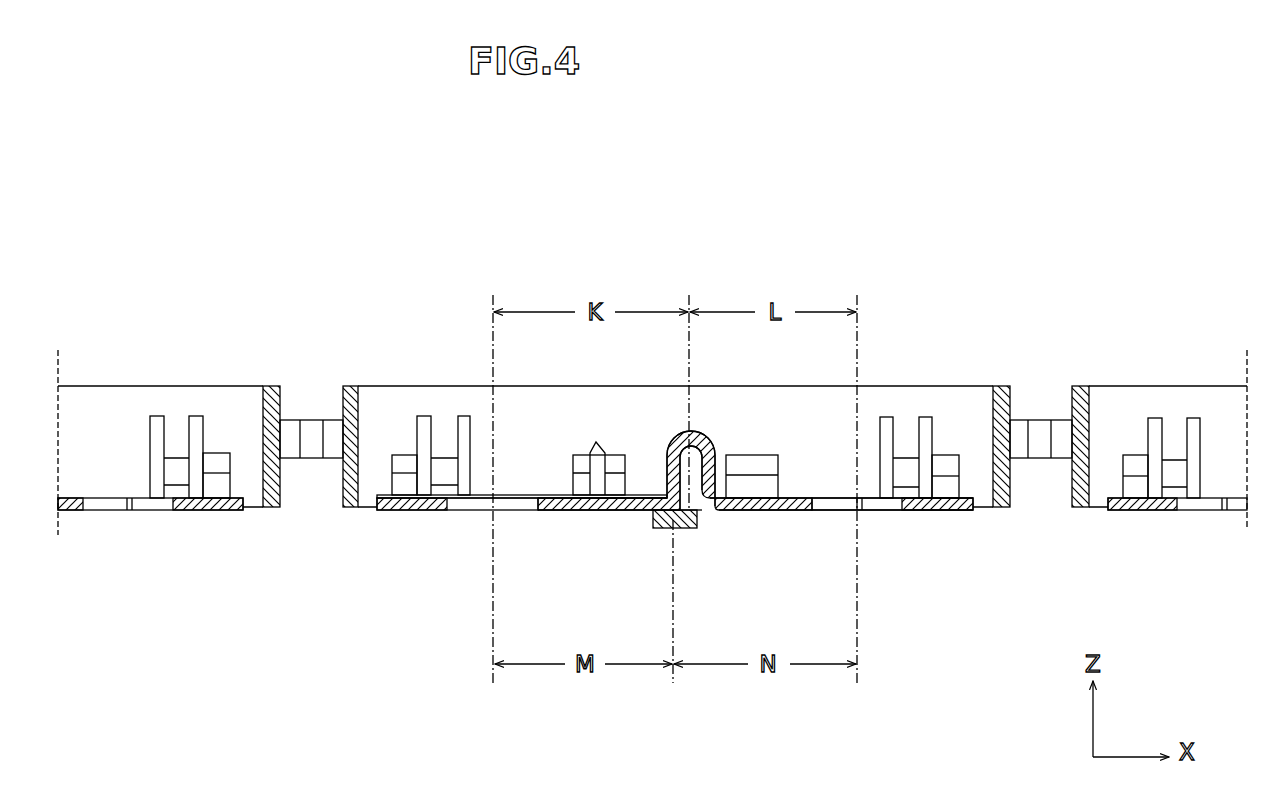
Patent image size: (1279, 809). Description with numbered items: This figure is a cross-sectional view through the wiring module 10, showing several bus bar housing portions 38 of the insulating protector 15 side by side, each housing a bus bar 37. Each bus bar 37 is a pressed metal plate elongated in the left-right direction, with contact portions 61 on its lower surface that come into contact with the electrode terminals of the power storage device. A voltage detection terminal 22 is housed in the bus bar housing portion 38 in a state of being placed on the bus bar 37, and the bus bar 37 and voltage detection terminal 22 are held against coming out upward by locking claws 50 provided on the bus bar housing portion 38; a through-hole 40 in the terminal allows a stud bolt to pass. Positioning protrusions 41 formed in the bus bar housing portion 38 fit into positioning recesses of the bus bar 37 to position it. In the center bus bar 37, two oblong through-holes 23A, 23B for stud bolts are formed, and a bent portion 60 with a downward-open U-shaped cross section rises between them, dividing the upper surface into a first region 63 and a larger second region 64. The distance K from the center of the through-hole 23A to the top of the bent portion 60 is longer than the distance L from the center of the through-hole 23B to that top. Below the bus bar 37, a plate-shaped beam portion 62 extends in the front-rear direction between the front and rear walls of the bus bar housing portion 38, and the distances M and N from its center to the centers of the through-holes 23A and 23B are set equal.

The wiring module 10 is at (157, 303).
The insulating protector 15 is at (100, 413).
The voltage detection terminal 22 is at (383, 495).
The through-hole 23A is at (455, 510).
The through-hole 23B is at (895, 510).
The bus bar 37 is at (217, 510).
The bus bar housing portion 38 is at (361, 392).
The through-hole 40 is at (535, 495).
The positioning protrusion 41 is at (596, 442).
The locking claw 50 is at (445, 472).
The bent portion 60 is at (700, 443).
The contact portion 61 is at (80, 510).
The beam portion 62 is at (662, 528).
The first region 63 is at (805, 498).
The second region 64 is at (640, 495).